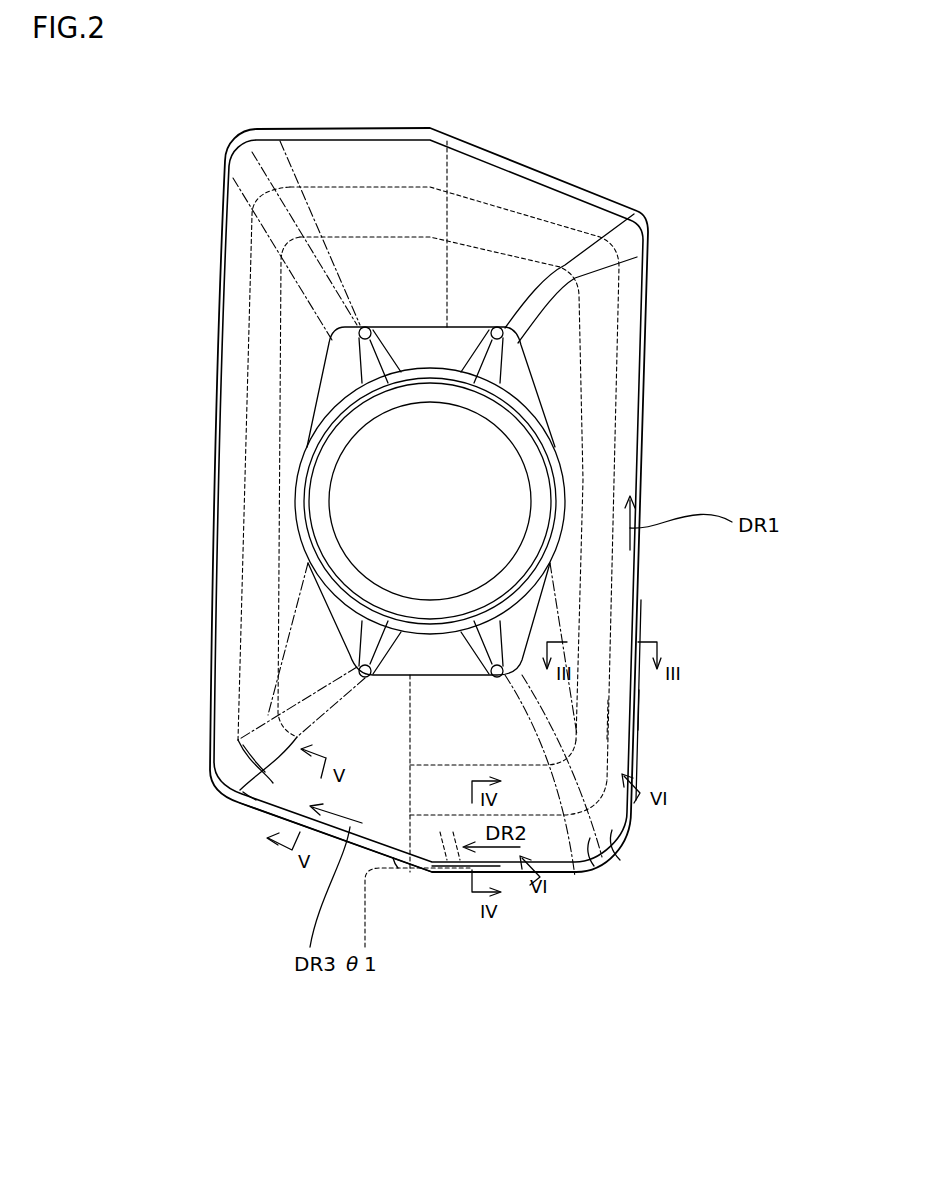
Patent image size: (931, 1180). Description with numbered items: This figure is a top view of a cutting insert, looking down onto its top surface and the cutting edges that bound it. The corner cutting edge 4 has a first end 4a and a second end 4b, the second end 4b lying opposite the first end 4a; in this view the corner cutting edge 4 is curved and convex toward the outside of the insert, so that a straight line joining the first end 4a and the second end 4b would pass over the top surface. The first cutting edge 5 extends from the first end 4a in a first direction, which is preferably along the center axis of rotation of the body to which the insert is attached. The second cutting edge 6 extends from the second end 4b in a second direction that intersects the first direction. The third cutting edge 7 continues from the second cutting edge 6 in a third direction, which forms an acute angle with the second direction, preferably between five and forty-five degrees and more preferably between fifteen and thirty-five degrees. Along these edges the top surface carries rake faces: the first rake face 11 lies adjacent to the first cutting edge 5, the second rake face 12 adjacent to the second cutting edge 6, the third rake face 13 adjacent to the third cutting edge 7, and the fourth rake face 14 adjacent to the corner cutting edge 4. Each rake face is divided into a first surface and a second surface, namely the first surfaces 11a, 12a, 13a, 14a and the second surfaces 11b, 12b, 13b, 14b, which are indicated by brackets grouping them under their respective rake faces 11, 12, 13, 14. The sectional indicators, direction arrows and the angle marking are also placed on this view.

The corner cutting edge 4 is at (630, 858).
The first end 4a is at (630, 827).
The second end 4b is at (572, 870).
The first cutting edge 5 is at (640, 617).
The second cutting edge 6 is at (512, 873).
The third cutting edge 7 is at (262, 815).
The first rake face 11 is at (757, 695).
The first surface 11a is at (640, 710).
The second surface 11b is at (622, 727).
The second rake face 12 is at (475, 980).
The first surface 12a is at (453, 855).
The second surface 12b is at (450, 860).
The third rake face 13 is at (96, 697).
The first surface 13a is at (243, 792).
The second surface 13b is at (243, 745).
The fourth rake face 14 is at (695, 930).
The first surface 14a is at (614, 838).
The second surface 14b is at (590, 848).